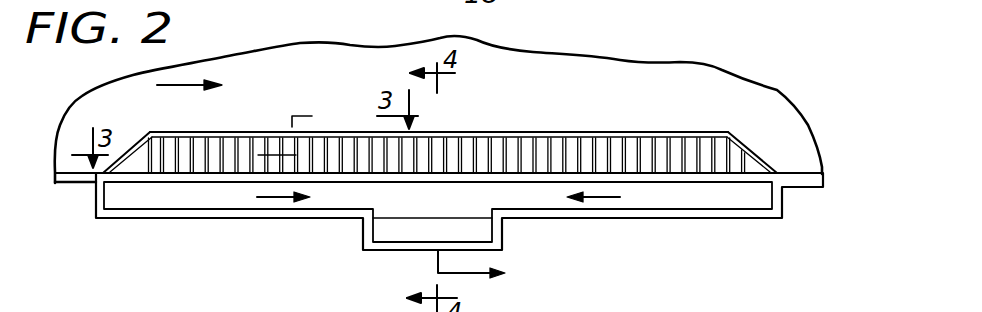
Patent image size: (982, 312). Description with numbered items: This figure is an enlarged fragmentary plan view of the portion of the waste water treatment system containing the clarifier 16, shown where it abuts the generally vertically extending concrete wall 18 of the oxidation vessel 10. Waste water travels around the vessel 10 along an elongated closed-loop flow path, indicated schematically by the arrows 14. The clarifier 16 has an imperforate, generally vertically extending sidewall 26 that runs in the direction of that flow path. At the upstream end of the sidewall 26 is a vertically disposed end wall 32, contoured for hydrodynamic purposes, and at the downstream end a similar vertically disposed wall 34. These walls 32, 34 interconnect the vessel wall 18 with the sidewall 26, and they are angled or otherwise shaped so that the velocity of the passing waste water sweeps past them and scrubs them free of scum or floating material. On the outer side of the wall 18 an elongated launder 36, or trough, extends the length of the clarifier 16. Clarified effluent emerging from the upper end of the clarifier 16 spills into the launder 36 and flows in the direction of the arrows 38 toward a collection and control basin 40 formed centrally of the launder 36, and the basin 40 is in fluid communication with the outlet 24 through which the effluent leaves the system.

The oxidation vessel 10 is at (783, 79).
The arrows 14 is at (184, 87).
The clarifier 16 is at (594, 126).
The concrete wall 18 is at (92, 183).
The outlet 24 is at (606, 0).
The sidewall 26 is at (248, 130).
The end wall 32 is at (129, 147).
The wall 34 is at (755, 153).
The launder 36 is at (723, 197).
The arrows 38 is at (275, 197).
The collection and control basin 40 is at (412, 226).